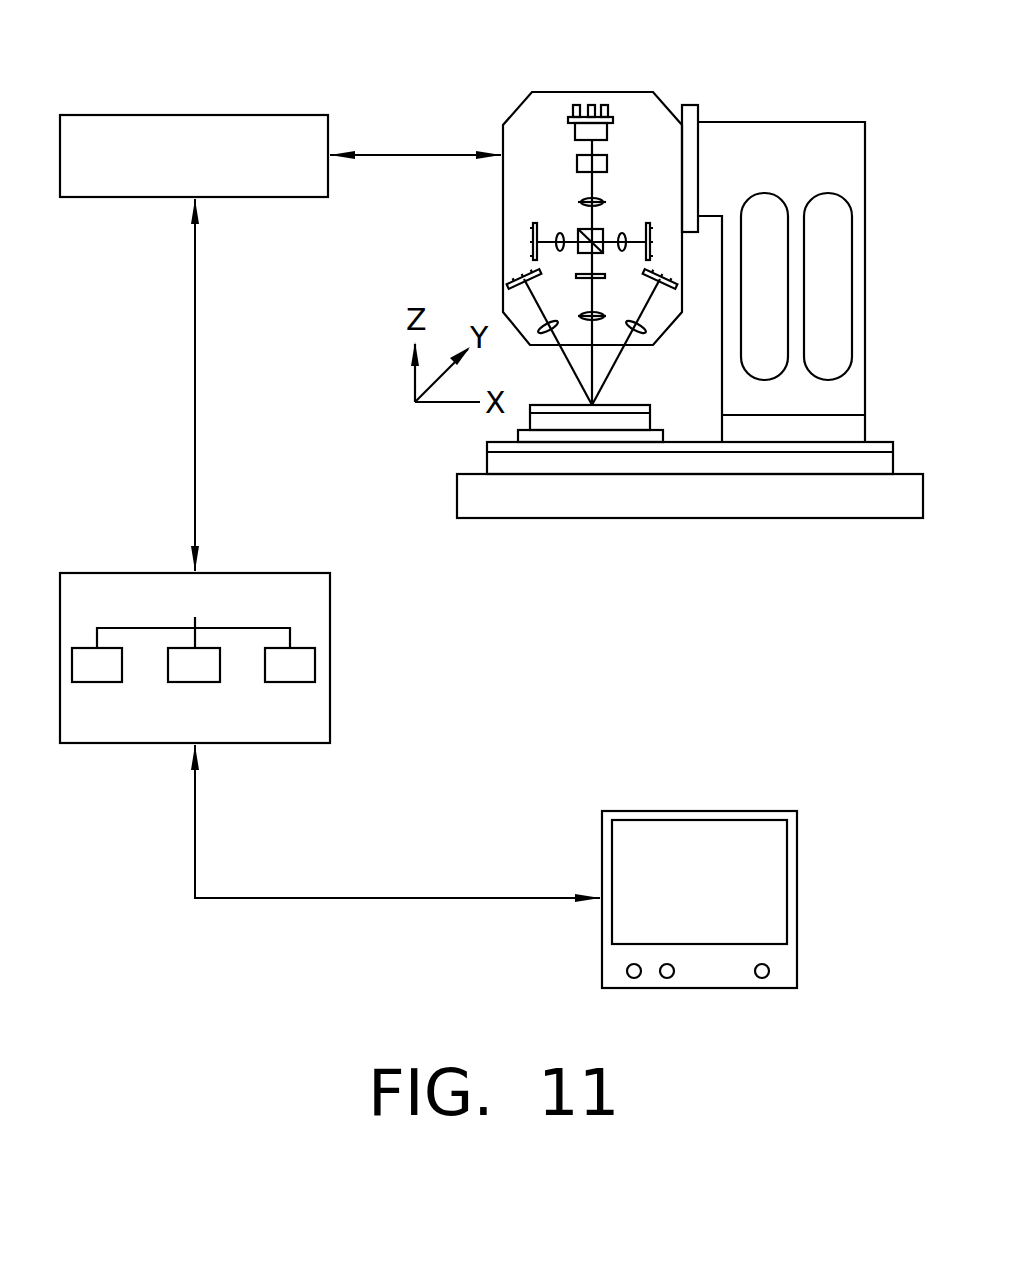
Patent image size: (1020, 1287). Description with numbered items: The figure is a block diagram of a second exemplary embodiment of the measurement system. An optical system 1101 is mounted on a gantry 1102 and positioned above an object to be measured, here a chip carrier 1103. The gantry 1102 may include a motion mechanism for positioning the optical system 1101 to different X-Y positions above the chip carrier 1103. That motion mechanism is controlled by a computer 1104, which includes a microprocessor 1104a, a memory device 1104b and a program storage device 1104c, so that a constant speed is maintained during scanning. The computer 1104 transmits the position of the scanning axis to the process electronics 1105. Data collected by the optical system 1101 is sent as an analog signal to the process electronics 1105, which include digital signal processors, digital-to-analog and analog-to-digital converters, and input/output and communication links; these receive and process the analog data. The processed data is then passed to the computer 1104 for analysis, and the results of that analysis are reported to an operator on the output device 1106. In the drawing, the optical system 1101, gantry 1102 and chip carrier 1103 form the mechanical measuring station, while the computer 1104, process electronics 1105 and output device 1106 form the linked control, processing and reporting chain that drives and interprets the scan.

The optical system 1101 is at (568, 117).
The gantry 1102 is at (750, 122).
The chip carrier 1103 is at (540, 427).
The computer 1104 is at (195, 658).
The microprocessor 1104a is at (94, 680).
The memory device 1104b is at (187, 680).
The program storage device 1104c is at (283, 680).
The process electronics 1105 is at (194, 156).
The output device 1106 is at (692, 810).